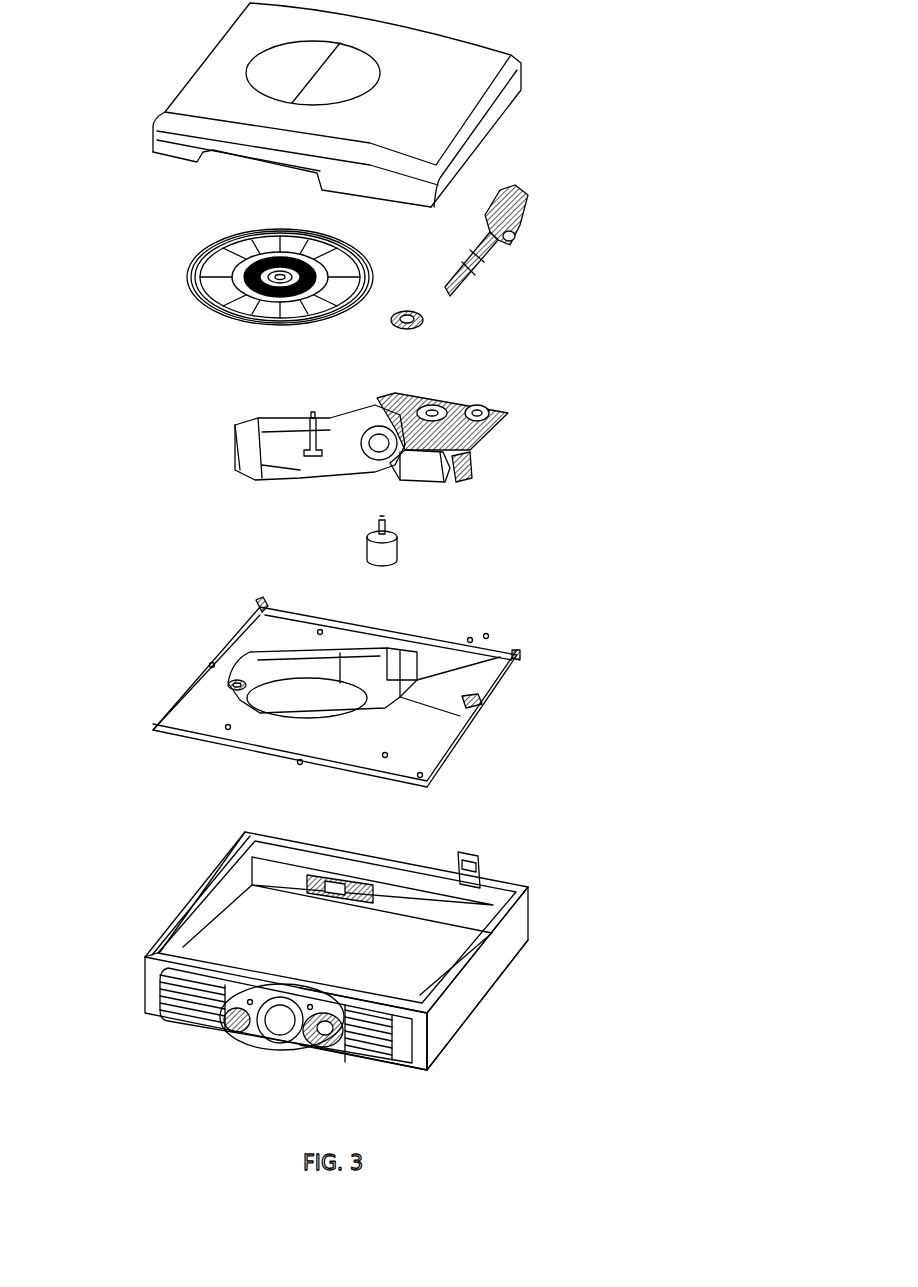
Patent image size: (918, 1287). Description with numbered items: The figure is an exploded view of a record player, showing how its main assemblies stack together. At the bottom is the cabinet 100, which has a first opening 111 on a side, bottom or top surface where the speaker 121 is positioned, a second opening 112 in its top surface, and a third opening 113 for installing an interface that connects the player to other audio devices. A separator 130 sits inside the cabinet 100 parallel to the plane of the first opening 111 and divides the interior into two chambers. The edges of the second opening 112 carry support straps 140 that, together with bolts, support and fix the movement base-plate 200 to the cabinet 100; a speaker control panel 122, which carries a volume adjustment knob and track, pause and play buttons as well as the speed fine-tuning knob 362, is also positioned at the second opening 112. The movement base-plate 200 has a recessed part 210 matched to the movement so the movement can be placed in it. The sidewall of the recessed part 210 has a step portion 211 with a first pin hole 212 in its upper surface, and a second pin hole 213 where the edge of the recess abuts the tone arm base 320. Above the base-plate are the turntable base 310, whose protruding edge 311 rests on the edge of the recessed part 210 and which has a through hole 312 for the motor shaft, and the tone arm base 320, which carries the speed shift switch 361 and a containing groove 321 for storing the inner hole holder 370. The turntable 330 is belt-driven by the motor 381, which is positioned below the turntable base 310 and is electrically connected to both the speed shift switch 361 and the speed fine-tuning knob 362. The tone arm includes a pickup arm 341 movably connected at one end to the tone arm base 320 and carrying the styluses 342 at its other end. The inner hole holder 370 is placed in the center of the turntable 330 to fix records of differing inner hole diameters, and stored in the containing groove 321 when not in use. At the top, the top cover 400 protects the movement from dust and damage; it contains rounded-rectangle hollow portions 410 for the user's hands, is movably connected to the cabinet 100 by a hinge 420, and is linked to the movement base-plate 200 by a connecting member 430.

The cabinet 100 is at (463, 1003).
The first opening 111 is at (160, 973).
The second opening 112 is at (480, 963).
The third opening 113 is at (345, 897).
The speaker 121 is at (215, 995).
The speaker control panel 122 is at (283, 1045).
The separator 130 is at (420, 1047).
The support straps 140 is at (150, 957).
The movement base-plate 200 is at (423, 747).
The recessed part 210 is at (463, 718).
The step portion 211 is at (245, 675).
The first pin hole 212 is at (236, 687).
The second pin hole 213 is at (487, 710).
The turntable base 310 is at (400, 465).
The protruding edge 311 is at (233, 427).
The through hole 312 is at (393, 467).
The tone arm base 320 is at (500, 407).
The containing groove 321 is at (380, 410).
The turntable 330 is at (203, 302).
The pickup arm 341 is at (518, 245).
The styluses 342 is at (467, 290).
The speed shift switch 361 is at (467, 468).
The speed fine-tuning knob 362 is at (237, 1030).
The inner hole holder 370 is at (428, 328).
The motor 381 is at (365, 547).
The top cover 400 is at (262, 32).
The hollow portions 410 is at (267, 167).
The hinge 420 is at (460, 889).
The connecting member 430 is at (258, 606).